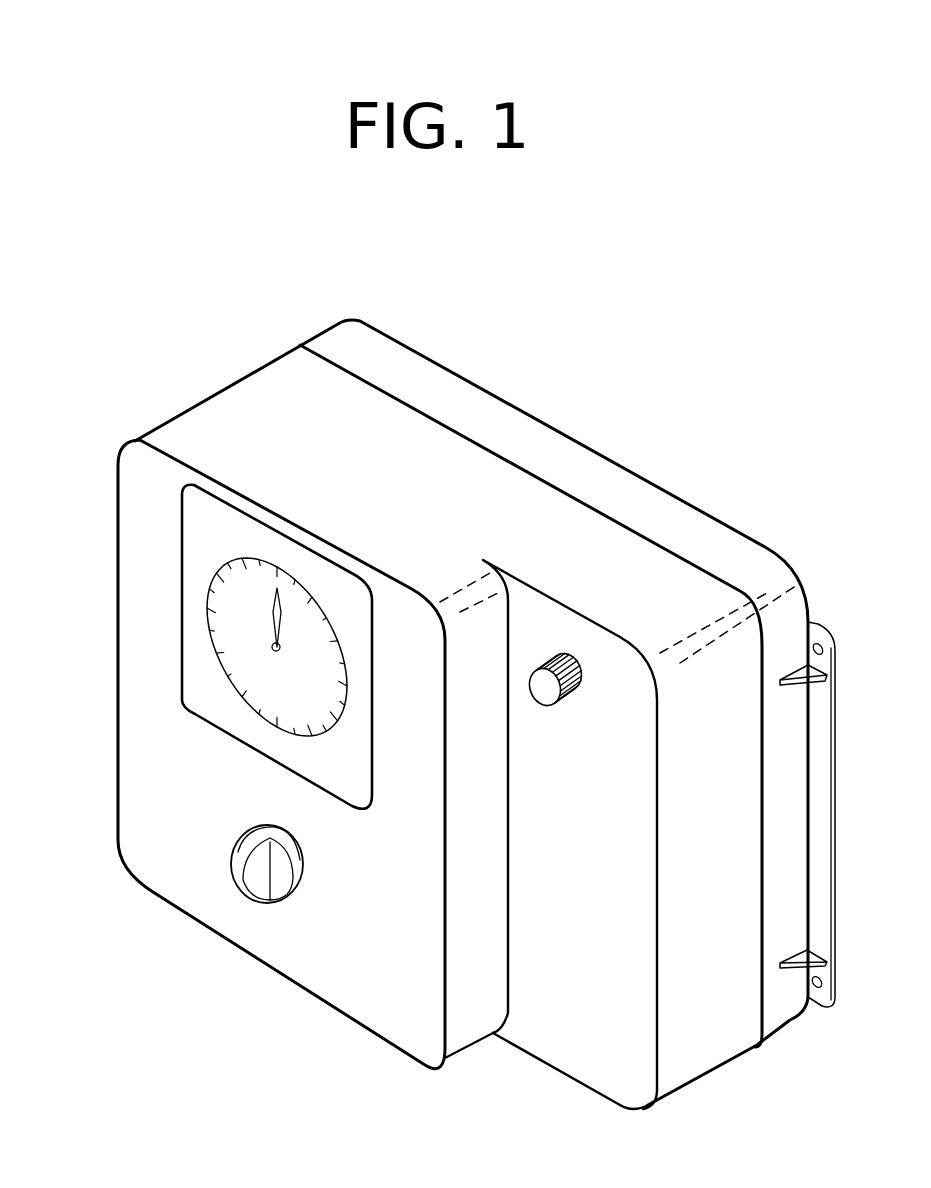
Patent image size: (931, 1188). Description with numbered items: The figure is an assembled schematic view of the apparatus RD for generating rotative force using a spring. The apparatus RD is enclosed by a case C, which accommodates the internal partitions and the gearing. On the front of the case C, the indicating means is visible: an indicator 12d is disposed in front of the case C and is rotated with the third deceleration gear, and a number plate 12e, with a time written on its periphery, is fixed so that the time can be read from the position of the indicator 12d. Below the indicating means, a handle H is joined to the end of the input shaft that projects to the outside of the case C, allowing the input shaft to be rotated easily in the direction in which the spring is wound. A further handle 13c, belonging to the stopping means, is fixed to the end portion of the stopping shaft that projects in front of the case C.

The apparatus for generating rotative force using spring RD is at (67, 282).
The case C is at (270, 393).
The number plate 12e is at (207, 593).
The indicator 12d is at (272, 613).
The handle H is at (255, 882).
The handle 13c is at (552, 702).